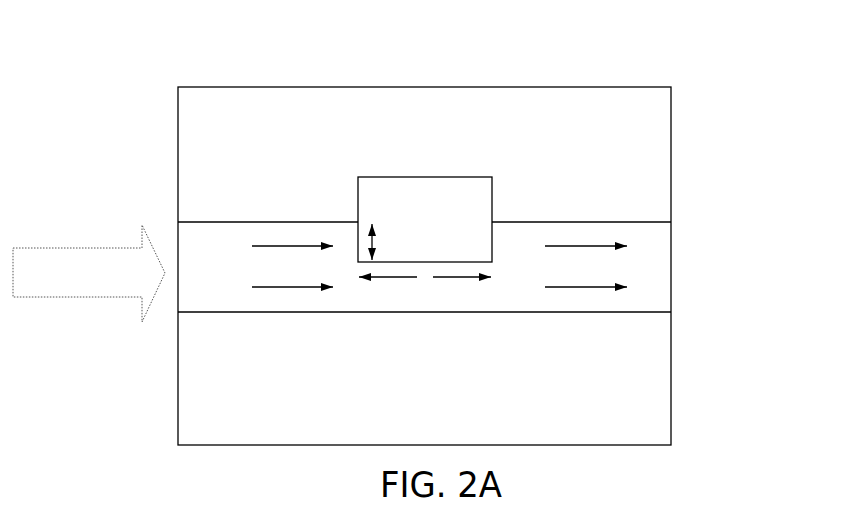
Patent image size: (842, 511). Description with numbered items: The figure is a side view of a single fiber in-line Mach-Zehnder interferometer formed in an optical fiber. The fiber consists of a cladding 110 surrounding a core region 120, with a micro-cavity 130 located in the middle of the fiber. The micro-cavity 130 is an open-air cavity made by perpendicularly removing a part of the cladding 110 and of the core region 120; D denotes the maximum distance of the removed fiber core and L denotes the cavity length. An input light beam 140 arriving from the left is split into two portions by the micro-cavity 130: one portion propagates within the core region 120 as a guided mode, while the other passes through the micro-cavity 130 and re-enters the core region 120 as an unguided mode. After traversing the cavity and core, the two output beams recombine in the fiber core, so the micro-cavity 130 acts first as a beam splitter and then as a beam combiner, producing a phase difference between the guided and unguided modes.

The cladding 110 is at (647, 120).
The core region 120 is at (650, 259).
The micro-cavity 130 is at (425, 195).
The input light beam 140 is at (75, 240).